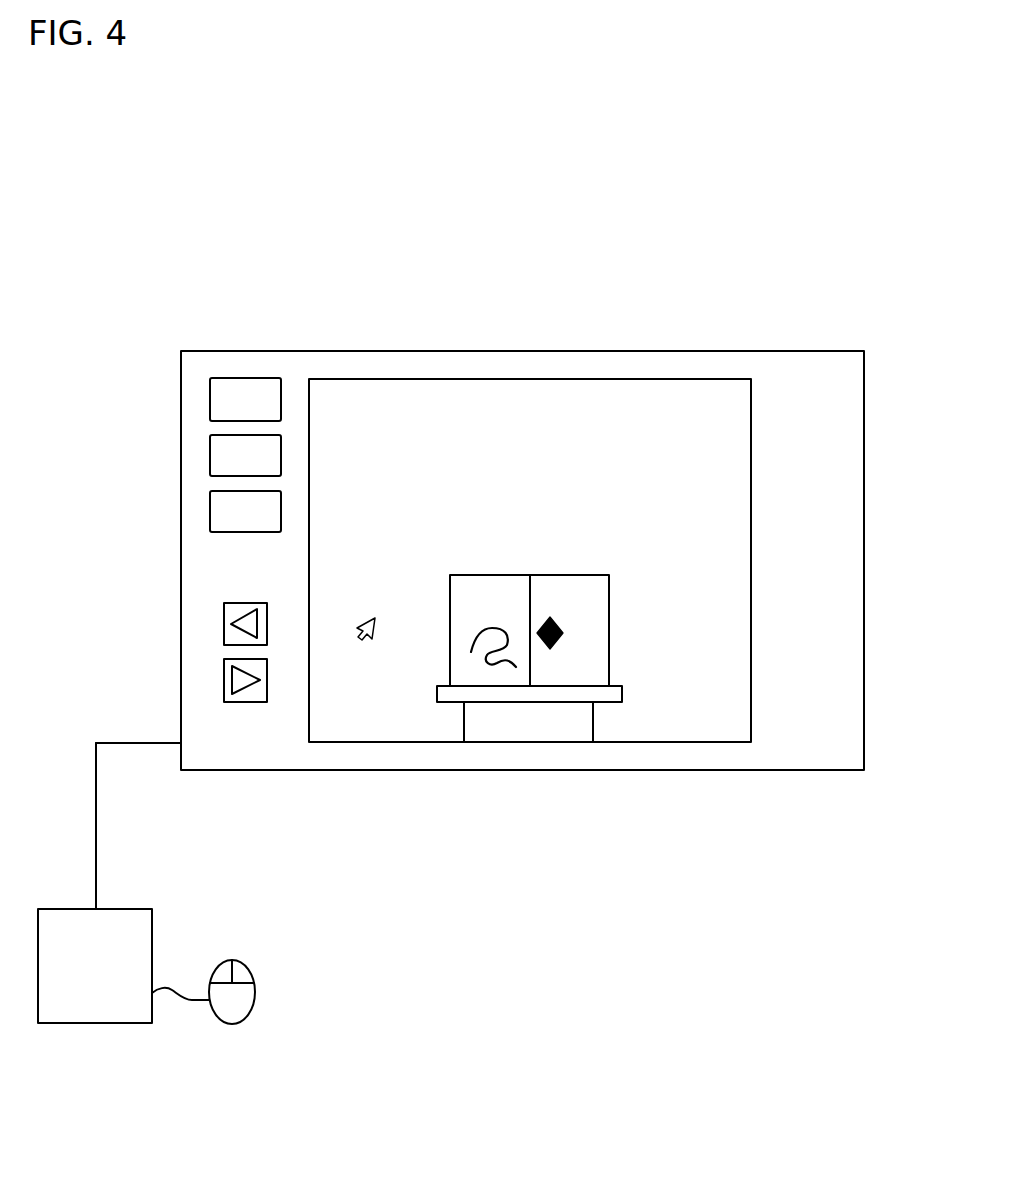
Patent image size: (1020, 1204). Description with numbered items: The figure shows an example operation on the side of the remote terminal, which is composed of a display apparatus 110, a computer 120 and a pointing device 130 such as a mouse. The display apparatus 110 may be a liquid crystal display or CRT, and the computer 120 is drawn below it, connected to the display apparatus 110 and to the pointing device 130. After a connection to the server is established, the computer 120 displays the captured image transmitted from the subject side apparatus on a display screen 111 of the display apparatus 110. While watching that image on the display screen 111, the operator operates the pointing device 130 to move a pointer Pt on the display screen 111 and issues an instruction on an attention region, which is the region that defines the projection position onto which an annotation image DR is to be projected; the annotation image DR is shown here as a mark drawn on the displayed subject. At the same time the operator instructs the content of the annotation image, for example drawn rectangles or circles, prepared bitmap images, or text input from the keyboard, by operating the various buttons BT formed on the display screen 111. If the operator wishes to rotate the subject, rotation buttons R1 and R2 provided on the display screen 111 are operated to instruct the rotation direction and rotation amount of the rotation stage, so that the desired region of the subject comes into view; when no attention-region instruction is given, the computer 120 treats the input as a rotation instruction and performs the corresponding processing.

The display apparatus 110 is at (818, 350).
The display screen 111 is at (853, 481).
The buttons BT is at (210, 398).
The rotation button R1 is at (224, 624).
The rotation button R2 is at (224, 680).
The pointer Pt is at (367, 641).
The annotation image DR is at (552, 650).
The computer 120 is at (132, 910).
The pointing device 130 is at (247, 963).